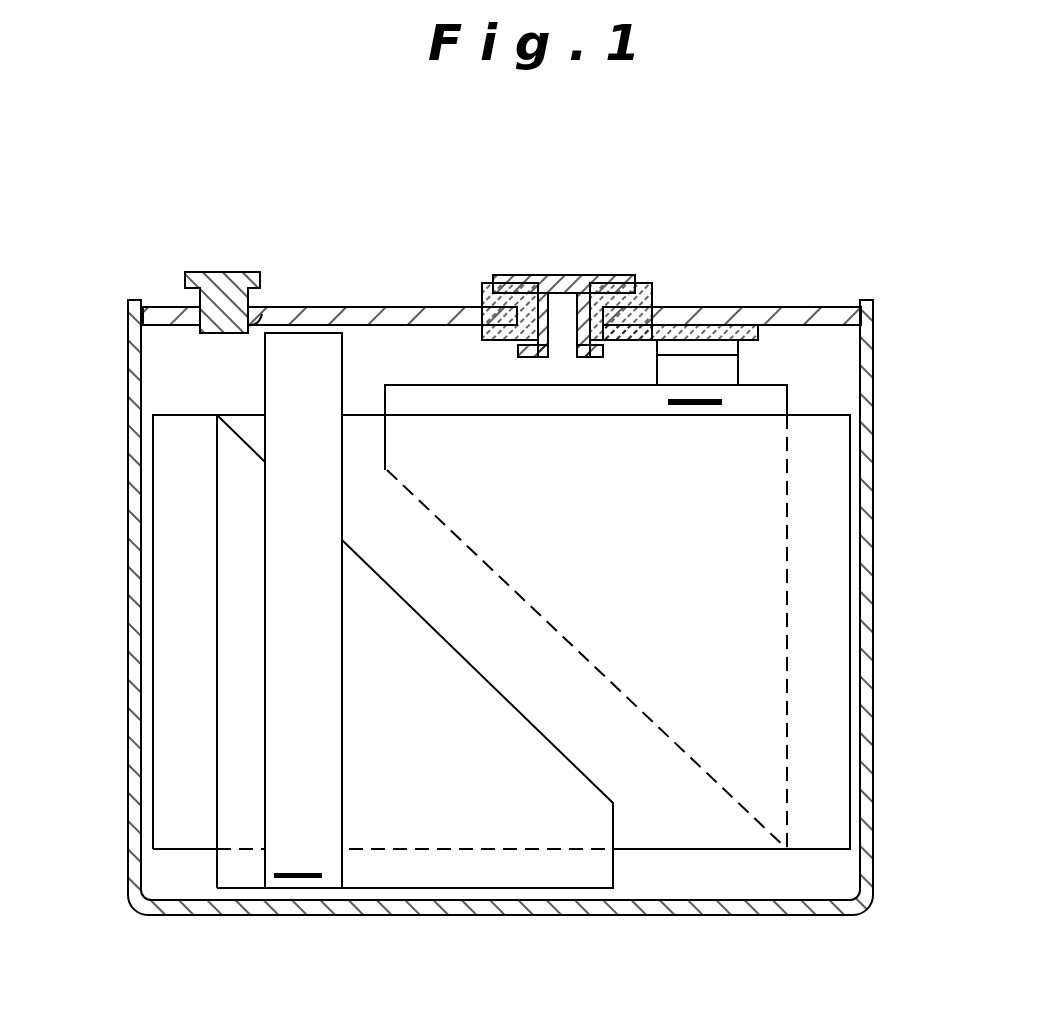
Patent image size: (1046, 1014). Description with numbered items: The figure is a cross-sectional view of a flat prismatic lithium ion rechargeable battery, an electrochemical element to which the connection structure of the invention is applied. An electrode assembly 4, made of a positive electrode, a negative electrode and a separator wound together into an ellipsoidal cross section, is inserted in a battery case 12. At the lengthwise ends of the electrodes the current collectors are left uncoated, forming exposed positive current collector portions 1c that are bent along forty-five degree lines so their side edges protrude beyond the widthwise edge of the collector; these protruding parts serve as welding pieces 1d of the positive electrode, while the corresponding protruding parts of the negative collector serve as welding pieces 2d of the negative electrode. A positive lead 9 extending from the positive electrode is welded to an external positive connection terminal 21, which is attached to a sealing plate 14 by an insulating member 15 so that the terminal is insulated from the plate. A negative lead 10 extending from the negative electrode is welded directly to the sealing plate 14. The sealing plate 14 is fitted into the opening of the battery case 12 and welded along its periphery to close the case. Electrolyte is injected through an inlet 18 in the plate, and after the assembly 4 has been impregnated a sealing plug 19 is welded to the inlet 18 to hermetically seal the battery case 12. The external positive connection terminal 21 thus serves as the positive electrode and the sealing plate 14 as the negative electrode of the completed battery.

The exposed positive current collector portion 1c is at (240, 712).
The welding piece of the positive electrode 1d is at (437, 398).
The welding piece of the negative electrode 2d is at (475, 868).
The electrode assembly 4 is at (838, 545).
The positive lead 9 is at (730, 364).
The negative lead 10 is at (325, 372).
The battery case 12 is at (873, 425).
The sealing plate 14 is at (768, 307).
The insulating member 15 is at (683, 330).
The inlet 18 is at (260, 310).
The sealing plug 19 is at (215, 287).
The external positive connection terminal 21 is at (575, 278).